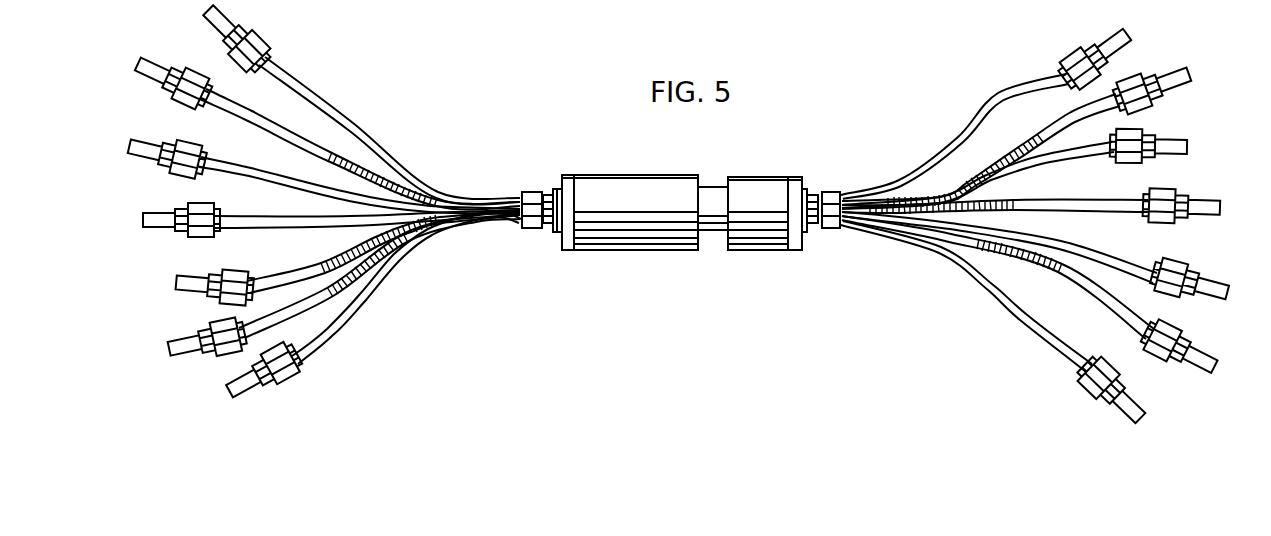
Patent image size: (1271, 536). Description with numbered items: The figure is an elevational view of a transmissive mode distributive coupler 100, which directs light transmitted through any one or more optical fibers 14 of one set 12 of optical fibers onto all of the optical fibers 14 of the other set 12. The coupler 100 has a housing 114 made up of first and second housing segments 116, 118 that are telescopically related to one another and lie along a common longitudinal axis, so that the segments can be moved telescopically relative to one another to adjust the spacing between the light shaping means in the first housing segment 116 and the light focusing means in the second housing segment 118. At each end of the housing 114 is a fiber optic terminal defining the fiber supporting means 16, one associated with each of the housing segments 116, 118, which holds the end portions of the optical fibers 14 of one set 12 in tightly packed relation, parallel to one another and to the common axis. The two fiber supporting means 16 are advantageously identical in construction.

The set of optical fibers 12 is at (422, 172).
The optical fiber 14 is at (248, 165).
The fiber supporting means 16 is at (546, 188).
The transmissive mode distributive coupler 100 is at (685, 200).
The housing 114 is at (619, 176).
The first housing segment 116 is at (607, 243).
The second housing segment 118 is at (758, 235).